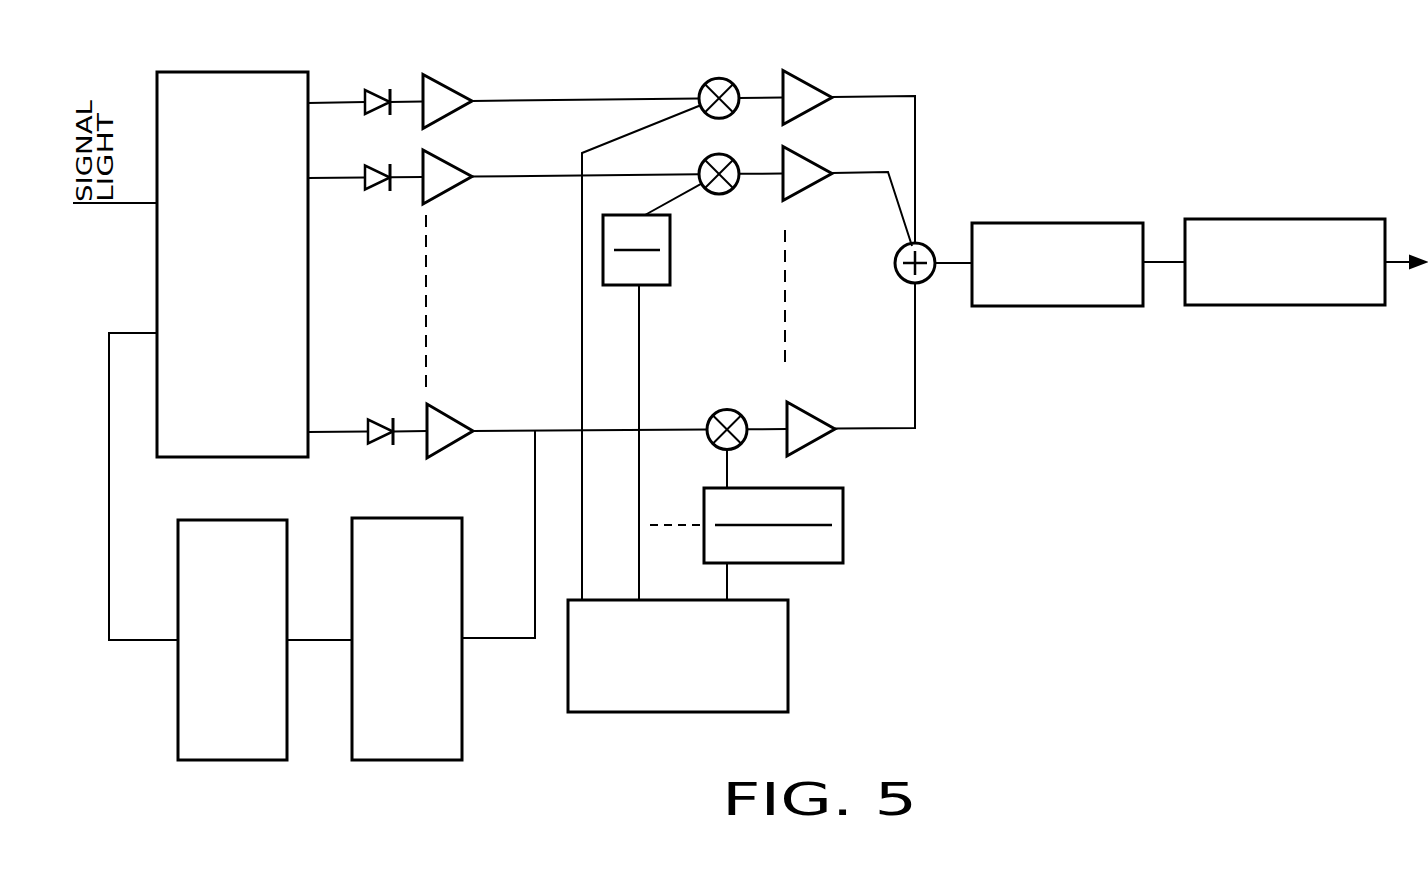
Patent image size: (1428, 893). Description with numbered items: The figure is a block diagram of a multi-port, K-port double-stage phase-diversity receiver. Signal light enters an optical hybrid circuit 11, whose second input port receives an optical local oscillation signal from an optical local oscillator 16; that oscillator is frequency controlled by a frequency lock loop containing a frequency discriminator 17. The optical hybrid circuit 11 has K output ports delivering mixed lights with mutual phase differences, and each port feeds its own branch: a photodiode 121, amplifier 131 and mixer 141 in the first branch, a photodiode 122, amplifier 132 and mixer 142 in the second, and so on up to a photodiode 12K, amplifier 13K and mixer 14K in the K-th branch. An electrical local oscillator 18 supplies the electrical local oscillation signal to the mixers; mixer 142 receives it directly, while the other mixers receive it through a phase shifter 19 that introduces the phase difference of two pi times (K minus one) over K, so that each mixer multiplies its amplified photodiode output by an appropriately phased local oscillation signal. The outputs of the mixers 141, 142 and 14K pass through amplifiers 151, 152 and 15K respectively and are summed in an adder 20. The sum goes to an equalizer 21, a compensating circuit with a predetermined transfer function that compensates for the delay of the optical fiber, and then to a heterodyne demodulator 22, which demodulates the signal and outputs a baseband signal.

The optical hybrid circuit 11 is at (261, 72).
The photodiode 121 is at (376, 88).
The photodiode 122 is at (378, 190).
The photodiode 12K is at (378, 444).
The amplifier 131 is at (456, 88).
The amplifier 132 is at (468, 166).
The amplifier 13K is at (460, 416).
The mixer 141 is at (714, 78).
The mixer 142 is at (736, 194).
The mixer 14K is at (728, 408).
The amplifier 151 is at (820, 90).
The amplifier 152 is at (812, 196).
The amplifier 15K is at (824, 420).
The optical local oscillator 16 is at (287, 712).
The frequency discriminator 17 is at (462, 712).
The electrical local oscillator 18 is at (788, 628).
The phase shifter 19 is at (670, 268).
The adder 20 is at (928, 246).
The equalizer 21 is at (1066, 223).
The heterodyne demodulator 22 is at (1293, 219).